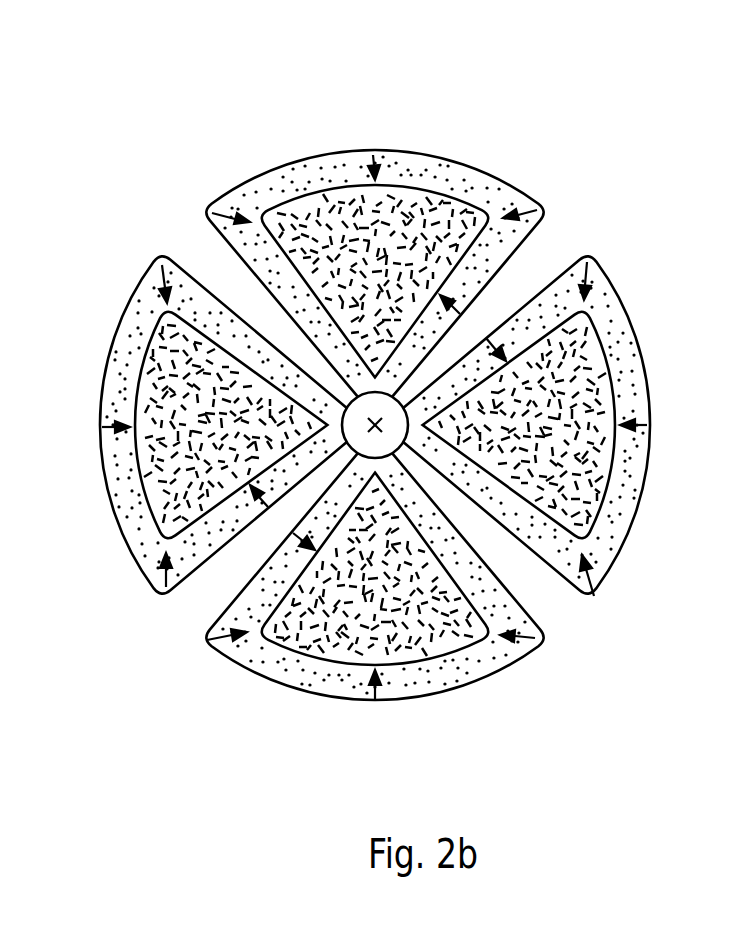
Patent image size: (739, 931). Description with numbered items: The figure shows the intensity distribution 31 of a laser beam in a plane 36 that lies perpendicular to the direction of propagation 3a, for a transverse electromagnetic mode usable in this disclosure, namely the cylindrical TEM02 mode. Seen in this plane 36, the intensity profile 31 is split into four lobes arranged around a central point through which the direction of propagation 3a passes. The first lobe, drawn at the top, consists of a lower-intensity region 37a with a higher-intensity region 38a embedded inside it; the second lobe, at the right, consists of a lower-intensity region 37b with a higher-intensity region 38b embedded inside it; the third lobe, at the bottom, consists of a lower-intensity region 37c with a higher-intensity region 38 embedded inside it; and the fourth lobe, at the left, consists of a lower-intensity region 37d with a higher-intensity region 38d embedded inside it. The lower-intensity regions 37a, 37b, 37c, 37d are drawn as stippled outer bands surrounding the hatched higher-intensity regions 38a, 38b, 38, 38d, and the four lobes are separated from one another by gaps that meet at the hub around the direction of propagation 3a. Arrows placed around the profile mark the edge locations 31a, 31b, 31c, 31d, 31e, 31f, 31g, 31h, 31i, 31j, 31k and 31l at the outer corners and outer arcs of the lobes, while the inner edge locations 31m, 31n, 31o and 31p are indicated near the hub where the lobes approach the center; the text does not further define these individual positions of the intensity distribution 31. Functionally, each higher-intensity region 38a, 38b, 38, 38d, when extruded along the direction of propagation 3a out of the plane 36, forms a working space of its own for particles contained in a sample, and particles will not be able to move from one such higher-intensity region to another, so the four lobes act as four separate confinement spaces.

The intensity distribution 31 is at (374, 387).
The plane 36 is at (400, 60).
The direction of propagation 3a is at (260, 313).
The lower-intensity region 37a is at (374, 232).
The lower-intensity region 37b is at (565, 424).
The lower-intensity region 37c is at (374, 613).
The lower-intensity region 37d is at (189, 441).
The fibrous core of third segment 38 is at (375, 618).
The higher-intensity region 38a is at (404, 229).
The higher-intensity region 38b is at (568, 426).
The higher-intensity region 38d is at (174, 443).
The edge portion 31a is at (338, 133).
The edge portion 31b is at (535, 172).
The edge portion 31c is at (634, 262).
The edge portion 31d is at (662, 388).
The edge portion 31e is at (638, 582).
The edge portion 31f is at (551, 681).
The edge portion 31g is at (332, 728).
The edge portion 31h is at (197, 692).
The edge portion 31i is at (115, 611).
The edge portion 31j is at (88, 383).
The edge portion 31k is at (106, 264).
The edge portion 31l is at (225, 174).
The inner edge portion 31m is at (538, 237).
The inner edge portion 31n is at (557, 286).
The inner edge portion 31o is at (267, 630).
The inner edge portion 31p is at (203, 585).